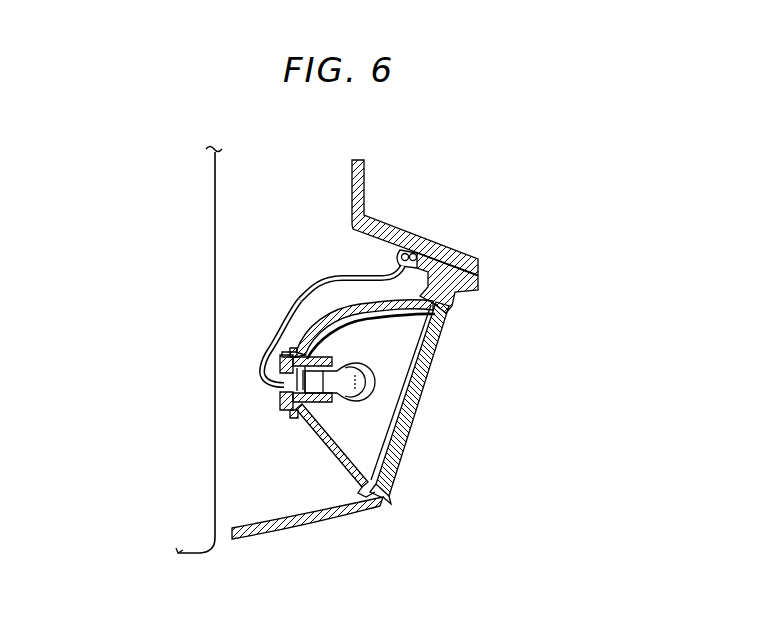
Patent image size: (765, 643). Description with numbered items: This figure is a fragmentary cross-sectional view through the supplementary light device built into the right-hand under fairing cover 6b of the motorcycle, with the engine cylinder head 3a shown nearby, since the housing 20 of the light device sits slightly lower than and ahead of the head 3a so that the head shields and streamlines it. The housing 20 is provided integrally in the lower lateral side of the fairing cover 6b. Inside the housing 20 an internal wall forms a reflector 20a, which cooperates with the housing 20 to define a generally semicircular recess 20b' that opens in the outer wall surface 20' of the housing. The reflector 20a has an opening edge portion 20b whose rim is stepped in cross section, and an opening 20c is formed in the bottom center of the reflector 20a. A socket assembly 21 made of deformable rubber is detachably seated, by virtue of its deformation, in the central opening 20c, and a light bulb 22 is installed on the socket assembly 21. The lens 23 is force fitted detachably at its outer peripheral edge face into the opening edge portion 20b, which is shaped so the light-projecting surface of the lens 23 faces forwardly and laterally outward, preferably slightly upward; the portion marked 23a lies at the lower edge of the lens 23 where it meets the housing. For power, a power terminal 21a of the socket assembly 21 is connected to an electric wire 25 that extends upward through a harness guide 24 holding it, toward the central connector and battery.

The cylinder head 3a is at (197, 531).
The right-hand under fairing cover 6b is at (402, 230).
The housing 20 is at (307, 537).
The outer wall surface 20' is at (446, 484).
The reflector 20a is at (373, 313).
The opening edge portion 20b is at (326, 450).
The semicircular recess 20b' is at (354, 418).
The opening 20c is at (280, 356).
The socket assembly 21 is at (283, 404).
The power terminal 21a is at (284, 352).
The light bulb 22 is at (365, 381).
The lens 23 is at (428, 383).
The reflector lower edge 23a is at (378, 503).
The harness guide 24 is at (430, 270).
The electric wire 25 is at (303, 292).